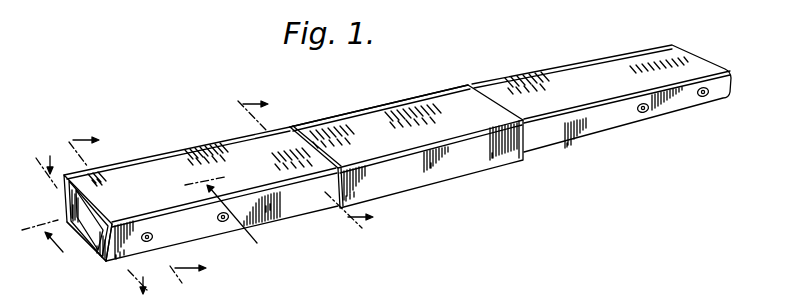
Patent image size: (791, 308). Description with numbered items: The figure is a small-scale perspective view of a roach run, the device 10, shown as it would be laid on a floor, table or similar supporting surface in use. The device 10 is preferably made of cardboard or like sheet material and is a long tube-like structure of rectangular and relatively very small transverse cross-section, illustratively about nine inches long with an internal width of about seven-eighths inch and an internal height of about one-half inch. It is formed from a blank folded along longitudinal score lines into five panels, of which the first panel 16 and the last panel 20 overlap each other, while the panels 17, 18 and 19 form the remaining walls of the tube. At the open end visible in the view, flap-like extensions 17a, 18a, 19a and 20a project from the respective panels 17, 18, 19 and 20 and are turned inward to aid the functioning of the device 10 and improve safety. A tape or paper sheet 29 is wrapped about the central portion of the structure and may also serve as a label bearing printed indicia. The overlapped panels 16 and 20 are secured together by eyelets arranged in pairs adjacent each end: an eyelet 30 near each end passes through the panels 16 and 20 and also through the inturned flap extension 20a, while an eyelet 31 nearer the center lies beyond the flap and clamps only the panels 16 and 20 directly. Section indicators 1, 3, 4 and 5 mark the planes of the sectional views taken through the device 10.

The section line 1- 1 is at (96, 215).
The section line 3- 3 is at (144, 205).
The section line 4- 4 is at (313, 160).
The section line 5- 5 is at (144, 221).
The device 10 is at (594, 58).
The first panel 16 is at (573, 141).
The panel 17 is at (535, 80).
The left-hand extension 17a is at (84, 193).
The panel 18 is at (63, 193).
The left-hand extension 18a is at (72, 206).
The panel 19 is at (93, 253).
The left-hand extension 19a is at (97, 207).
The last panel 20 is at (107, 263).
The left-hand extension 20a is at (125, 220).
The tape or paper sheet 29 is at (409, 98).
The eyelet 30 is at (153, 235).
The eyelet 31 is at (225, 223).